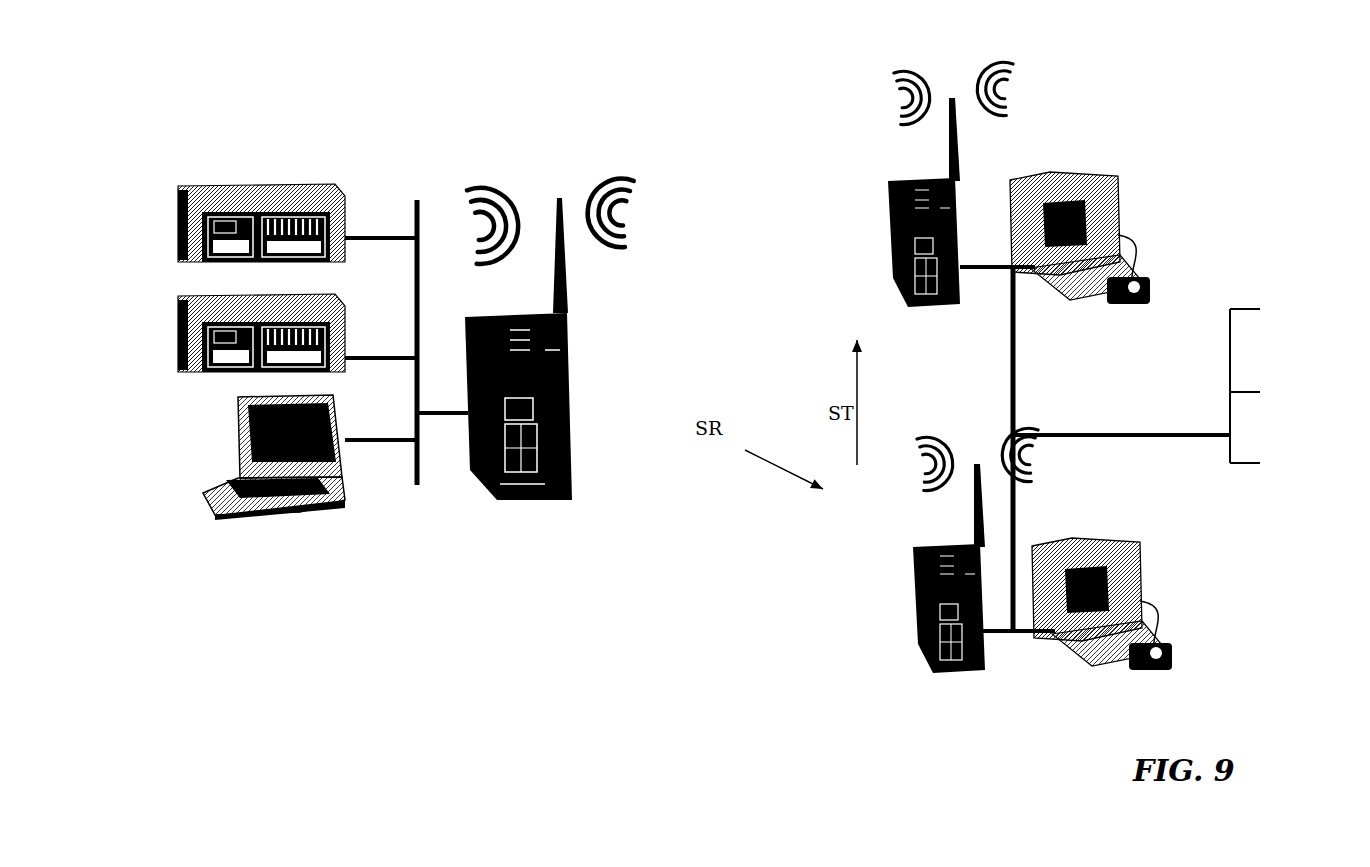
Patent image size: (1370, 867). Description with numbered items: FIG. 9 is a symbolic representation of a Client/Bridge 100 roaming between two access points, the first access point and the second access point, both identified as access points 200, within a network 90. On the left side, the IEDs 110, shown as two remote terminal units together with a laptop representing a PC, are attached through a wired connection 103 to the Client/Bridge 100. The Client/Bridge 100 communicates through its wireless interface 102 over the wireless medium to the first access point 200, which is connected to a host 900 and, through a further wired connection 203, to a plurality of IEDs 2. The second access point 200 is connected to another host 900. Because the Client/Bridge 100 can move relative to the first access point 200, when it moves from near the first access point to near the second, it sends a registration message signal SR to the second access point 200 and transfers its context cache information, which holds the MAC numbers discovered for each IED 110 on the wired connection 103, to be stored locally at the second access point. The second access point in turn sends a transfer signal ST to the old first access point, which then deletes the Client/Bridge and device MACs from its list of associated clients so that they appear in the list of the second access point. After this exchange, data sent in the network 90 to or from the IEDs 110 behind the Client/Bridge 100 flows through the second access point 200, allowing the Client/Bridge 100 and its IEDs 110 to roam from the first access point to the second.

The IEDs 2 is at (1290, 295).
The network 90 is at (1034, 94).
The Client/Bridge 100 is at (592, 433).
The wireless interface 102 is at (548, 167).
The wired connection 103 is at (401, 484).
The IEDs 110 is at (176, 262).
The access points 200 is at (875, 248).
The wired connection 203 is at (1150, 454).
The host 900 is at (1111, 438).